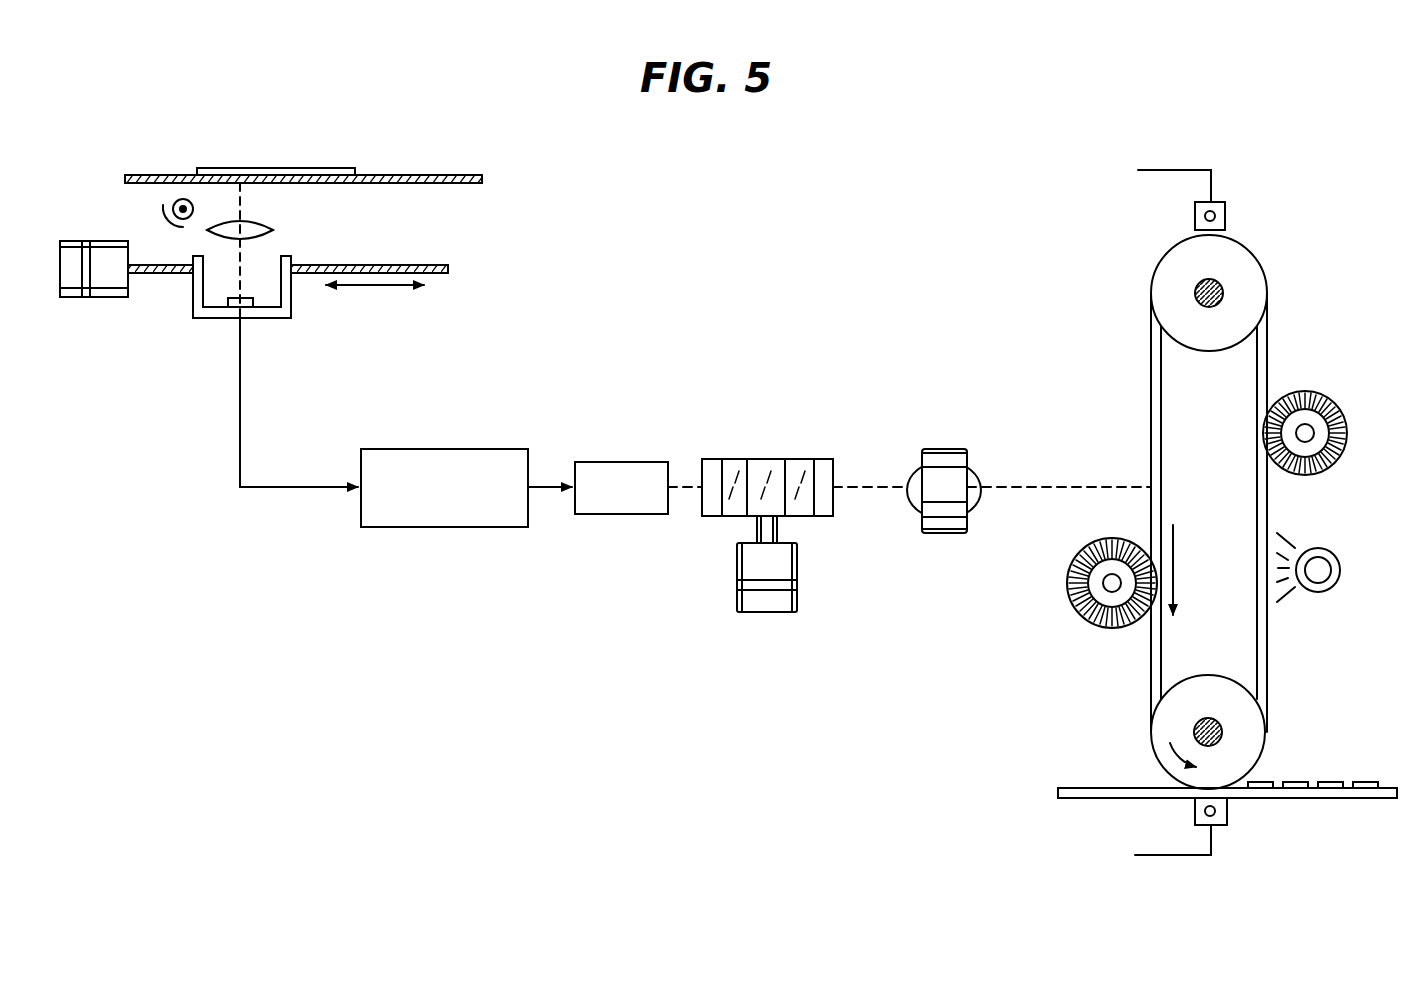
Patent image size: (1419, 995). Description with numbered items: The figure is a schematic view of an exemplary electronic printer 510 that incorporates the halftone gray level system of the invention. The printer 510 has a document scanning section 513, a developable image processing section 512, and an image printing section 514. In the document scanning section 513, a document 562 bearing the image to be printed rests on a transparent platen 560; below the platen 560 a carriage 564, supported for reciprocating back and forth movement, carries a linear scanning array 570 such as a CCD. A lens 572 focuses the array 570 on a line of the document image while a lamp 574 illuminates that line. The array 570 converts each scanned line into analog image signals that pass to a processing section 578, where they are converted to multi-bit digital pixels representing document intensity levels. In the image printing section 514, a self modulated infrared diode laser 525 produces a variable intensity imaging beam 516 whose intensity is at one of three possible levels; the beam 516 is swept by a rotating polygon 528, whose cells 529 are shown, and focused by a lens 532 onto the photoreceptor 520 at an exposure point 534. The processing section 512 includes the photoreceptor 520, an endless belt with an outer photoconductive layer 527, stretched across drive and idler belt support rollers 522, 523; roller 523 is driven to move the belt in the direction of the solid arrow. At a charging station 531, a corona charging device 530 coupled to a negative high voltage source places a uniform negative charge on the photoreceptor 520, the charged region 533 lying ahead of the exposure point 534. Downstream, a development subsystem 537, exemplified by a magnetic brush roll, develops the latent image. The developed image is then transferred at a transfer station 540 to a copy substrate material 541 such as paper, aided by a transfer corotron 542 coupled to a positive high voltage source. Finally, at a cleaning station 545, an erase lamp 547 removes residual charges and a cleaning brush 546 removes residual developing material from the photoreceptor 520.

The electronic printer 510 is at (790, 196).
The developable image processing section 512 is at (1208, 512).
The document scanning section 513 is at (286, 245).
The image printing section 514 is at (763, 495).
The imaging beam 516 is at (1008, 487).
The photoreceptor 520 is at (1276, 325).
The drive belt support roller 522 is at (1195, 348).
The idler belt support roller 523 is at (1240, 715).
The self modulated I.R. diode laser 525 is at (632, 462).
The photoconductive layer 527 is at (1268, 655).
The rotating polygon 528 is at (735, 459).
The modulator cells 529 is at (822, 473).
The corona charging device 530 is at (1228, 200).
The charging station 531 is at (1208, 205).
The lens 532 is at (950, 449).
The charged belt region 533 is at (1168, 253).
The exposure point 534 is at (1148, 487).
The development subsystem 537 is at (1090, 540).
The transfer station 540 is at (1263, 771).
The copy substrate material 541 is at (1085, 788).
The transfer corotron 542 is at (1220, 825).
The cleaning station 545 is at (1334, 485).
The cleaning brush 546 is at (1335, 395).
The erase lamp 547 is at (1338, 555).
The transparent platen 560 is at (390, 185).
The document 562 is at (263, 167).
The carriage 564 is at (207, 318).
The linear scanning array 570 is at (253, 288).
The lens 572 is at (262, 227).
The lamp 574 is at (163, 204).
The processing section 578 is at (494, 449).